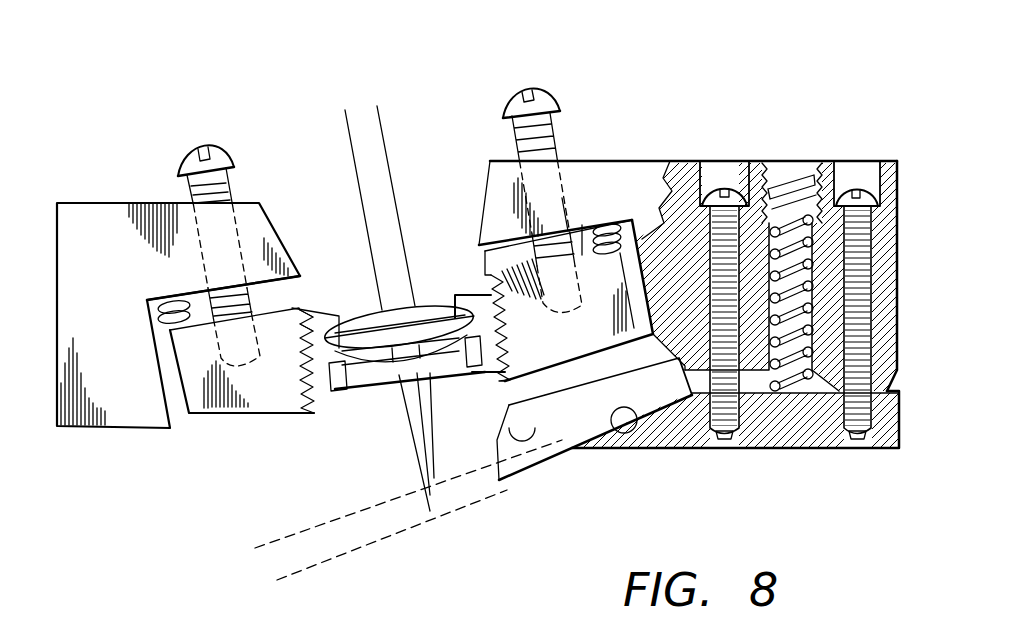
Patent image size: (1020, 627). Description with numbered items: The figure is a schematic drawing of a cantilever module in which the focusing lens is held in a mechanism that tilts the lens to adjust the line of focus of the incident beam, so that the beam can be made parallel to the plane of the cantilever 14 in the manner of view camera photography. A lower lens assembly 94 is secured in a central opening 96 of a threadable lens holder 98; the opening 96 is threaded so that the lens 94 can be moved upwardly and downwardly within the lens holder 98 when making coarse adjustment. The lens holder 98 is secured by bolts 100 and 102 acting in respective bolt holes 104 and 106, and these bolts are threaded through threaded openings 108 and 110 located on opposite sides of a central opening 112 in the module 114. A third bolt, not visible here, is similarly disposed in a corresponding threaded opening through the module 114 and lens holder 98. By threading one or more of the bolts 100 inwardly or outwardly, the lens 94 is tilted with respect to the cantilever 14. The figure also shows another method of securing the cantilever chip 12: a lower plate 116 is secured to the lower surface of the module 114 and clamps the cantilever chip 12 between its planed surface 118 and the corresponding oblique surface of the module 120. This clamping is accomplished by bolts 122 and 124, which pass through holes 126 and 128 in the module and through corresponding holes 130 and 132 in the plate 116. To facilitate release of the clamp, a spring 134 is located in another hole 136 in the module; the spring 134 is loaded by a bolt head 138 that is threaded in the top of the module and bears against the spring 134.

The cantilever chip 12 is at (667, 377).
The cantilever 14 is at (483, 490).
The lower lens assembly 94 is at (413, 310).
The central opening 96 is at (318, 323).
The threadable lens holder 98 is at (233, 383).
The bolt 100 is at (185, 158).
The bolt 102 is at (547, 88).
The bolt hole 104 is at (283, 388).
The bolt hole 106 is at (547, 290).
The threaded opening 108 is at (238, 227).
The threaded opening 110 is at (566, 190).
The central opening 112 is at (482, 190).
The module 114 is at (127, 410).
The lower plate 116 is at (843, 437).
The planed surface 118 is at (612, 410).
The oblique surface of the module 120 is at (497, 437).
The bolt 122 is at (720, 187).
The bolt 124 is at (845, 187).
The hole 126 is at (715, 250).
The hole 128 is at (865, 187).
The hole 130 is at (740, 428).
The hole 132 is at (862, 432).
The spring 134 is at (790, 390).
The hole 136 is at (808, 275).
The bolt head 138 is at (793, 187).